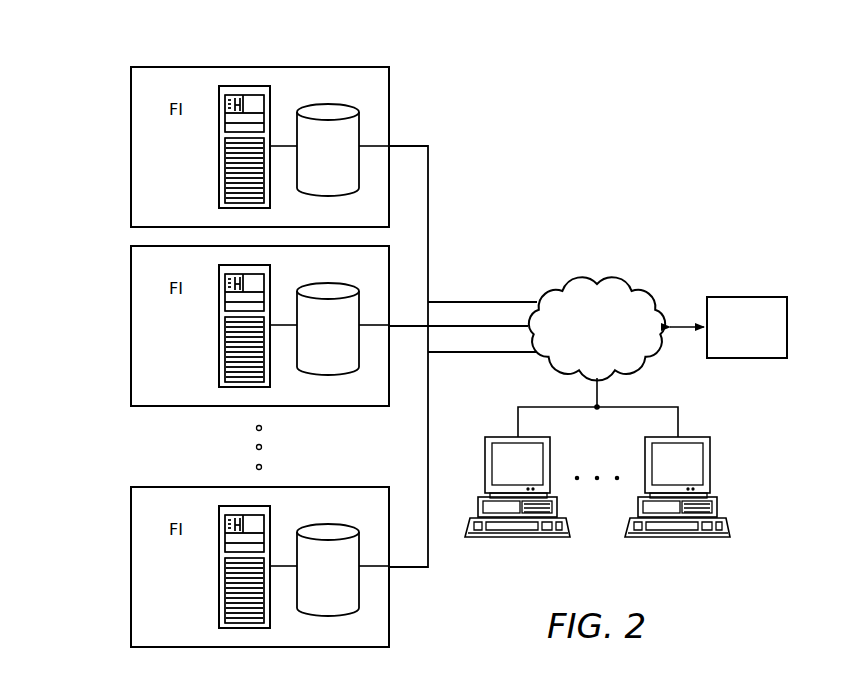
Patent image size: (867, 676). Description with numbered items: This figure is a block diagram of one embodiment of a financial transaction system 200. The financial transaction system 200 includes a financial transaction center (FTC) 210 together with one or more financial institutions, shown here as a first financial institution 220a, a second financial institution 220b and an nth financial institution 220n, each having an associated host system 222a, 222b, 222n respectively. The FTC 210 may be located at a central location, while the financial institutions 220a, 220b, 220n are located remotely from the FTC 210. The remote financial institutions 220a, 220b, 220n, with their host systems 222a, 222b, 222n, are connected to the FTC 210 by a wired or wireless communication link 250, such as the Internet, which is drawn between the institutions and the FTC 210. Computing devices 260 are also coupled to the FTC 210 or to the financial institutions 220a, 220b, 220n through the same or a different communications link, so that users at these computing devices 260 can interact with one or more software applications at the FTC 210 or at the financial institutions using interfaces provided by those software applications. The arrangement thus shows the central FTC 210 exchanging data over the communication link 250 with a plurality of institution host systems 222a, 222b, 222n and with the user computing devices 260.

The financial transaction system 200 is at (663, 150).
The financial transaction center (FTC) 210 is at (745, 297).
The financial institution 220a is at (217, 147).
The financial institution 220b is at (217, 326).
The financial institution 220n is at (217, 567).
The host system 222a is at (219, 182).
The host system 222b is at (219, 361).
The host system 222n is at (219, 602).
The communication link 250 is at (581, 339).
The computing device 260 is at (517, 538).